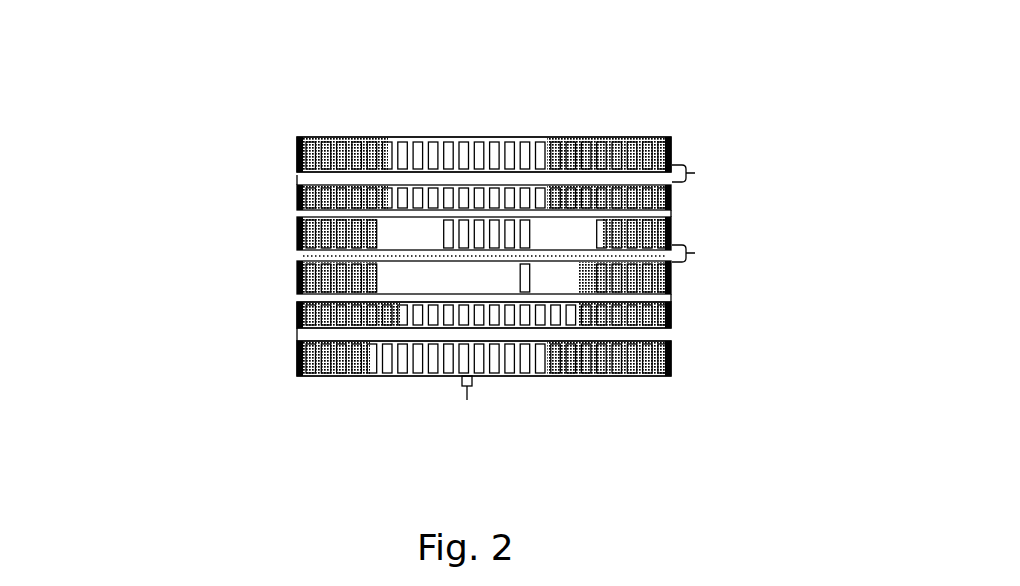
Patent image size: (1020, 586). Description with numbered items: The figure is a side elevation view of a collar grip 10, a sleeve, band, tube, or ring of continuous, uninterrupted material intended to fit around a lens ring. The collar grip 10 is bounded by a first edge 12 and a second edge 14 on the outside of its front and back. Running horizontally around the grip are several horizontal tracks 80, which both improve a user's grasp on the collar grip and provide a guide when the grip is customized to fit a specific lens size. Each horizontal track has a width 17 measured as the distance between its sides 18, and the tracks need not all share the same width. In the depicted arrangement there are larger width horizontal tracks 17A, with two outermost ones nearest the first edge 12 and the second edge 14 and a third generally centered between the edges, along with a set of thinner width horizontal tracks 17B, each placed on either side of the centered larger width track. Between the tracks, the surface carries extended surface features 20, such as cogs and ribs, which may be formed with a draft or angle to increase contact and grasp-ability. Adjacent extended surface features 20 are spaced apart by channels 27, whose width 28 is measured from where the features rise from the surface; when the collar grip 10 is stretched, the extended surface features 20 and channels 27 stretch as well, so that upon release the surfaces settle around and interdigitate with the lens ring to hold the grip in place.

The collar grip 10 is at (170, 163).
The first edge 12 is at (327, 137).
The second edge 14 is at (296, 373).
The width of horizontal track 17 is at (705, 213).
The larger width horizontal tracks 17A is at (673, 297).
The thinner width horizontal tracks 17B is at (296, 333).
The sides 18 is at (650, 328).
The extended surface features 20 is at (413, 281).
The channels 27 is at (545, 137).
The width of channels 28 is at (468, 405).
The horizontal tracks 80 is at (296, 257).